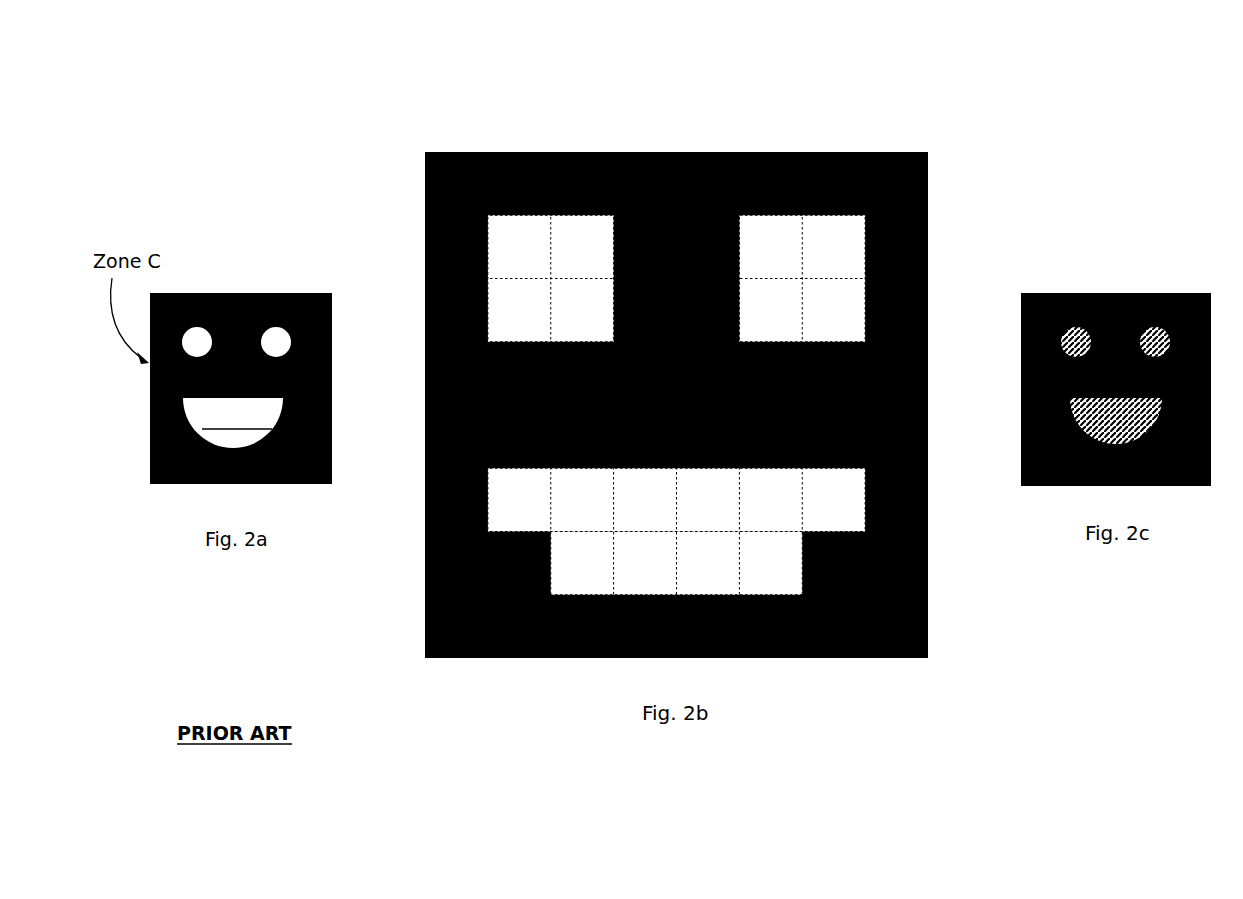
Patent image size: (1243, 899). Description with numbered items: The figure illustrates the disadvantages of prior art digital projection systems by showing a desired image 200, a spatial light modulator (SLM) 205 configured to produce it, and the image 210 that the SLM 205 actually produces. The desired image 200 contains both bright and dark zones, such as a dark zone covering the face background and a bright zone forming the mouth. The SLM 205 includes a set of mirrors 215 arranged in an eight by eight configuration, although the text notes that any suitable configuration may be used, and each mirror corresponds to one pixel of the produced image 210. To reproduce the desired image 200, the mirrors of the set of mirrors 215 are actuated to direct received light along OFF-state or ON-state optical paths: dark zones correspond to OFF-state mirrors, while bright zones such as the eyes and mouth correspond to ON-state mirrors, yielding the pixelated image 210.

In FIG. 2a, the desired image 200 is at (292, 280).
In FIG. 2b, the spatial light modulator 205 is at (534, 95).
In FIG. 2c, the image 210 is at (1123, 282).
In FIG. 2b, the set of mirrors 215 is at (678, 398).